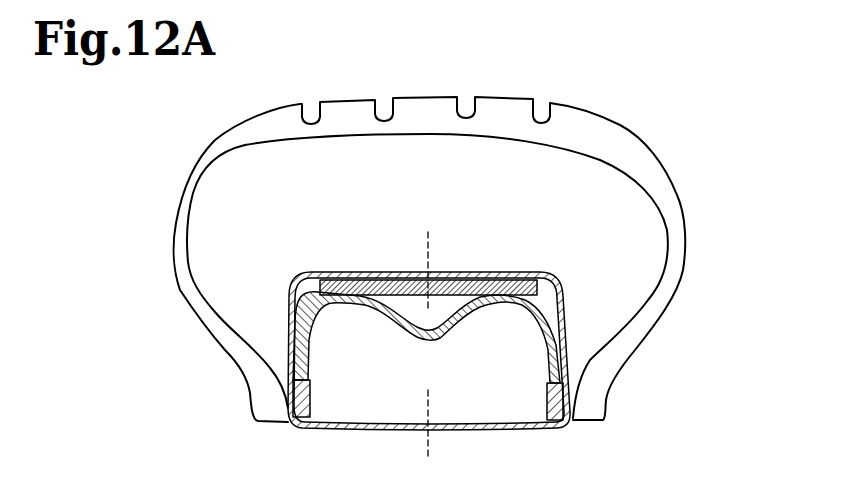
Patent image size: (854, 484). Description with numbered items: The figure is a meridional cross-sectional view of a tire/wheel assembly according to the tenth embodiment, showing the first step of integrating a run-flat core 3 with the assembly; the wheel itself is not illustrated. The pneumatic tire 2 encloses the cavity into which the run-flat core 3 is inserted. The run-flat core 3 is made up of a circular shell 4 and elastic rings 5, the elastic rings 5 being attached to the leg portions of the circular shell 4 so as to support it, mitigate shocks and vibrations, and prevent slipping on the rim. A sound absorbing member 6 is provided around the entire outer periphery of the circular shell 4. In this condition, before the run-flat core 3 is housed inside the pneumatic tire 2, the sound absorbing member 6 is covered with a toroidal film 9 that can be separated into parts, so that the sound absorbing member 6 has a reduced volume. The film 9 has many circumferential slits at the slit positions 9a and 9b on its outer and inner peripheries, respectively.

The pneumatic tire 2 is at (598, 128).
The run-flat core 3 is at (468, 304).
The circular shell 4 is at (525, 323).
The elastic ring 5 is at (310, 397).
The sound absorbing member 6 is at (370, 272).
The film 9 is at (558, 272).
The slit position 9a is at (428, 248).
The slit position 9b is at (430, 447).